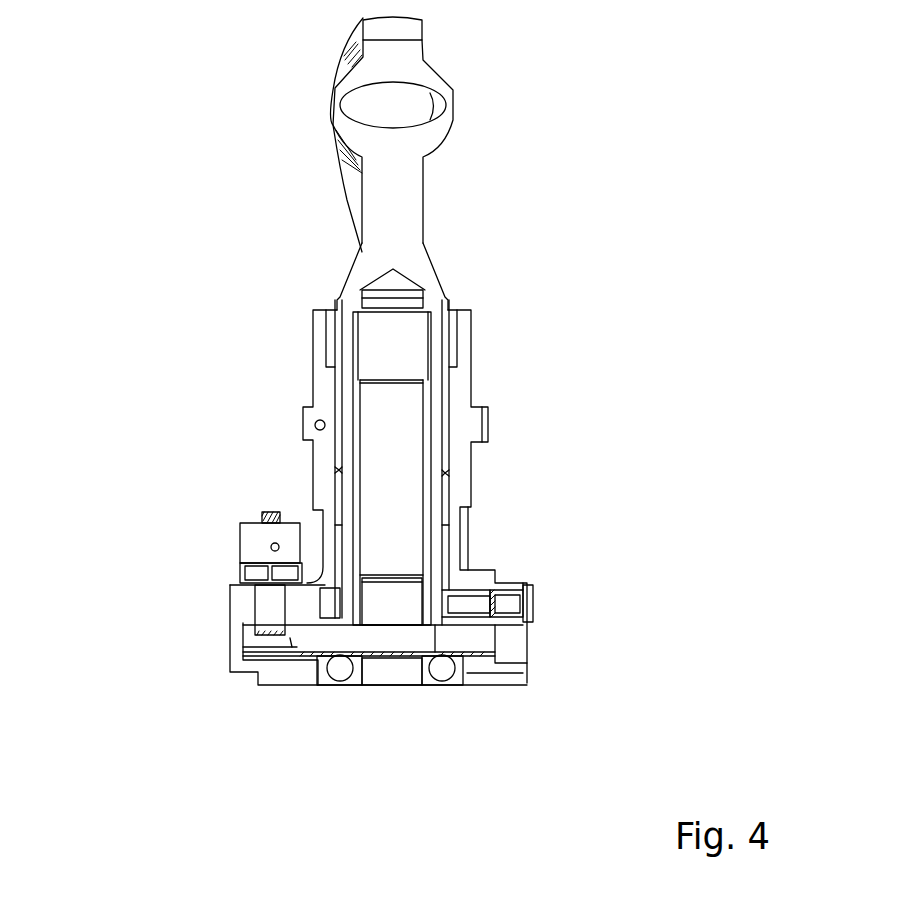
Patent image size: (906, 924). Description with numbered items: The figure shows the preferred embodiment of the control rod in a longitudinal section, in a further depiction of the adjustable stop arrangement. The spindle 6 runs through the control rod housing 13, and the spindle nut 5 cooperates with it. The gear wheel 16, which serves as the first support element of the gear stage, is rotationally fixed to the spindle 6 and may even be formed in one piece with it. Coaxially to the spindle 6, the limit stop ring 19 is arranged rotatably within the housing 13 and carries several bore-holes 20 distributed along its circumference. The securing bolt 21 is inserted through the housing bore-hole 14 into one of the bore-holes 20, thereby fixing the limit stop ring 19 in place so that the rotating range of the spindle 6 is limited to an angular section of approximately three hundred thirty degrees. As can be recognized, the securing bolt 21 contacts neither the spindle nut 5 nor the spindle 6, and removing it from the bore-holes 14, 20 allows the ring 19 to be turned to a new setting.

The control rod housing 13 is at (462, 363).
The spindle 6 is at (383, 443).
The spindle nut 5 is at (342, 503).
The limit stop ring 19 is at (330, 604).
The bore-hole 20 is at (452, 590).
The securing bolt 21 is at (523, 597).
The housing bore-hole 14 is at (503, 615).
The gear wheel 16 is at (467, 642).